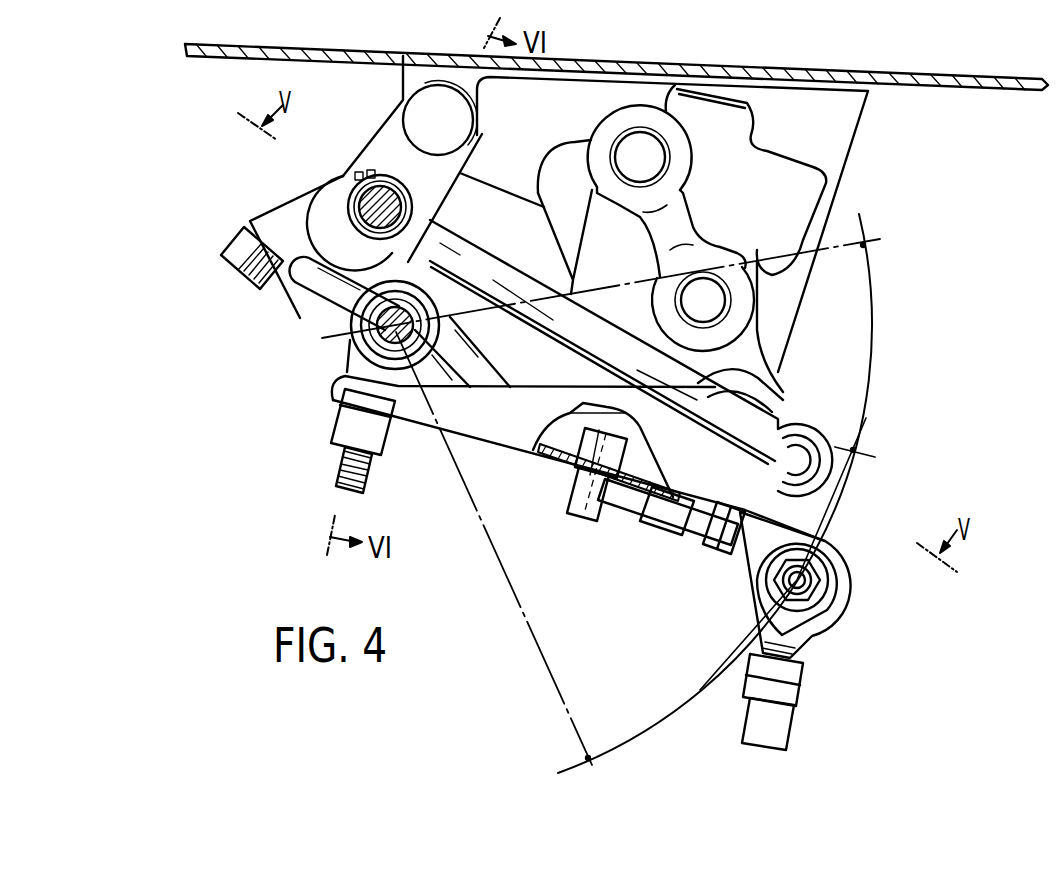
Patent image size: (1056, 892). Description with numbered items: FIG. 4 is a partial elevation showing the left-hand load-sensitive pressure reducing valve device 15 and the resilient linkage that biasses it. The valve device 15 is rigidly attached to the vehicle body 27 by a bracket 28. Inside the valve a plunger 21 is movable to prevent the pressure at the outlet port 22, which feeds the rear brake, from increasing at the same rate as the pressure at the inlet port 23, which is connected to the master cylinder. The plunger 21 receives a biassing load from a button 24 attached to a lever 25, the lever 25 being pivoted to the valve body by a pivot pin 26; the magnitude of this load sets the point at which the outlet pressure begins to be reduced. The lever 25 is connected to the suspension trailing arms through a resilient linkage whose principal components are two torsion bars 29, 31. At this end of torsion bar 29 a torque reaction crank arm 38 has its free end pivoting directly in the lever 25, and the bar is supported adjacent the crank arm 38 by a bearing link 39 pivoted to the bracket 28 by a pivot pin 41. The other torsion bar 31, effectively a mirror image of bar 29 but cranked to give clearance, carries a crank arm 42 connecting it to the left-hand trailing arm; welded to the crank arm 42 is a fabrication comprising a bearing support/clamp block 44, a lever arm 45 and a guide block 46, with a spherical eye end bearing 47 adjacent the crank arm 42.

The valve device 15 is at (822, 174).
The plunger 21 is at (535, 447).
The outlet port 22 is at (640, 150).
The inlet port 23 is at (713, 302).
The button 24 is at (597, 517).
The lever 25 is at (738, 500).
The pivot pin 26 is at (777, 398).
The vehicle body 27 is at (981, 88).
The bracket 28 is at (843, 121).
The torsion bar 29 is at (377, 192).
The torsion bar 31 is at (380, 333).
The crank arm 38 is at (767, 443).
The bearing link 39 is at (384, 140).
The pivot pin 41 is at (462, 130).
The crank arm 42 is at (737, 503).
The bearing support/clamp block 44 is at (297, 193).
The lever arm 45 is at (577, 475).
The guide block 46 is at (690, 530).
The spherical eye end bearing 47 is at (343, 362).